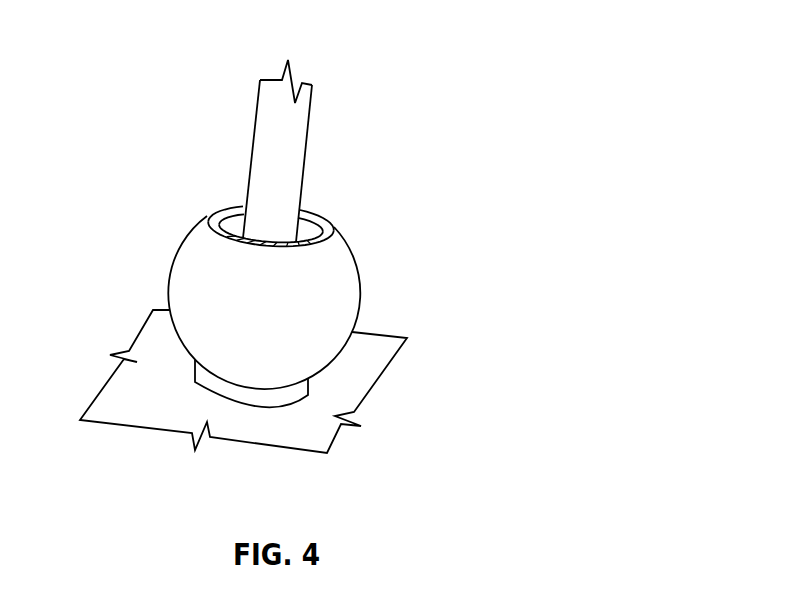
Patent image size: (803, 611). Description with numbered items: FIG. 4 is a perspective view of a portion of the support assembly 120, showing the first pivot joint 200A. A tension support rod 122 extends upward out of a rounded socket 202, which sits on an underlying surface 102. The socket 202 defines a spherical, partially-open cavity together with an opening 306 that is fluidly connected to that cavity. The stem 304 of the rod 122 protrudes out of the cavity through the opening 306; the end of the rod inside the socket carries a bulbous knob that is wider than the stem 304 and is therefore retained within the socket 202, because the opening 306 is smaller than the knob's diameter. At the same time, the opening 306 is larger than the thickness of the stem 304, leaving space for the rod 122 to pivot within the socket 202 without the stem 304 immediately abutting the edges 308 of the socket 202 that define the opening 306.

The substrate surface 102 is at (158, 392).
The support assembly 120 is at (393, 92).
The tension support rod 122 is at (267, 110).
The first pivot joint 200A is at (118, 176).
The socket 202 is at (182, 278).
The stem 304 is at (272, 243).
The opening 306 is at (310, 236).
The edges 308 is at (232, 211).